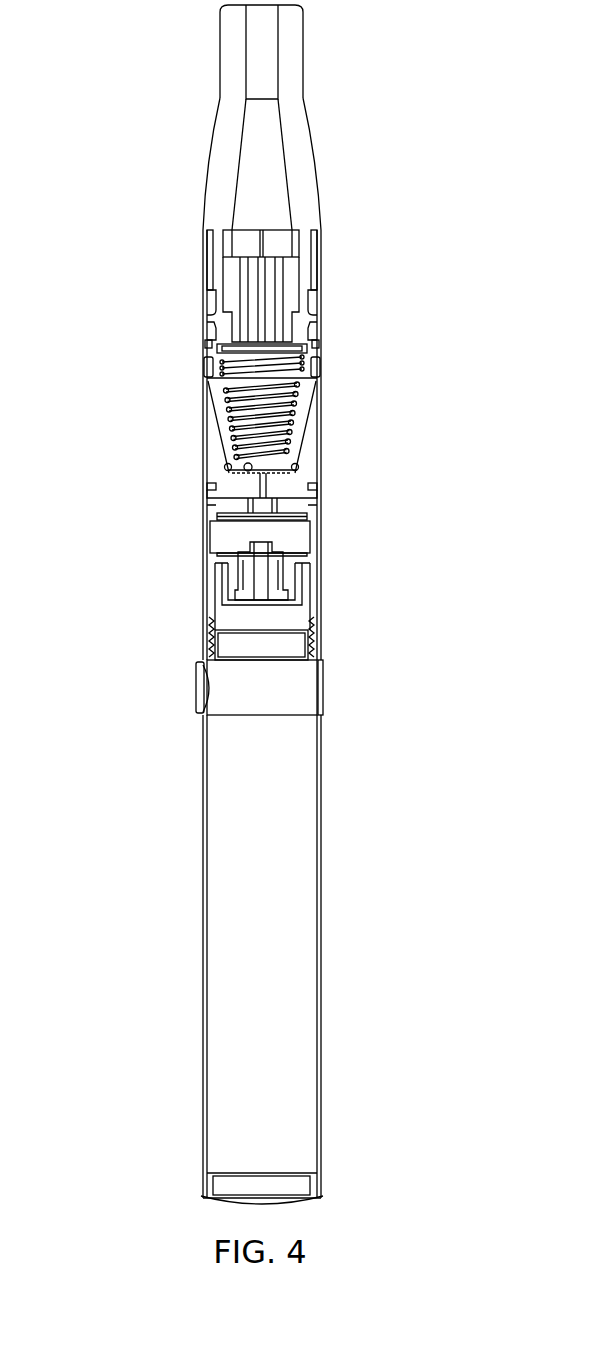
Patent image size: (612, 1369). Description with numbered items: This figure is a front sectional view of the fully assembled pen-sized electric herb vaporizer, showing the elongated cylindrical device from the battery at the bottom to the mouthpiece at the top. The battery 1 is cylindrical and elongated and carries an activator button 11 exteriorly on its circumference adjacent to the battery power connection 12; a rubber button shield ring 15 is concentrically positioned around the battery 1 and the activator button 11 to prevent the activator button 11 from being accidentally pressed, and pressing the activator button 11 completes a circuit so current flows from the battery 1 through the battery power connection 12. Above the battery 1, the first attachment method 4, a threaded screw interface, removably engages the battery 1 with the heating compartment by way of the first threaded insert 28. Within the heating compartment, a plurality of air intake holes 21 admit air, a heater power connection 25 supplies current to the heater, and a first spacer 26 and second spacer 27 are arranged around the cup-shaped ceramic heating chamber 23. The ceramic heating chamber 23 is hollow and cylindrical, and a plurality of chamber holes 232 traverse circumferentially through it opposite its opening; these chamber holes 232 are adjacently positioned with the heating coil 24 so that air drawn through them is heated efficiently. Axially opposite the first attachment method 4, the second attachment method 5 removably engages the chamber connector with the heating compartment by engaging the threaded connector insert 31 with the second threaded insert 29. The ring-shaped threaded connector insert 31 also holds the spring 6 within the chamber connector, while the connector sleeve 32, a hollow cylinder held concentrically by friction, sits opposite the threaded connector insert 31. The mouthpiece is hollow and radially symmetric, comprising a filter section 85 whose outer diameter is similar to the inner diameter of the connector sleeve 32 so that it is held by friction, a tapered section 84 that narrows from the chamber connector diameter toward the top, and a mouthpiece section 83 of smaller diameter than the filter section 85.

The battery 1 is at (208, 853).
The first attachment method 4 is at (210, 630).
The second attachment method 5 is at (208, 355).
The spring 6 is at (212, 382).
The activator button 11 is at (197, 690).
The battery power connection 12 is at (290, 613).
The button shield ring 15 is at (323, 682).
The plurality of air intake holes 21 is at (206, 548).
The ceramic heating chamber 23 is at (213, 422).
The heating coil 24 is at (244, 467).
The heater power connection 25 is at (288, 590).
The first spacer 26 is at (317, 497).
The second spacer 27 is at (317, 400).
The first threaded insert 28 is at (317, 522).
The second threaded insert 29 is at (318, 362).
The threaded connector insert 31 is at (315, 328).
The connector sleeve 32 is at (317, 238).
The mouthpiece section 83 is at (227, 42).
The tapered section 84 is at (213, 142).
The filter section 85 is at (218, 240).
The plurality of chamber holes 232 is at (225, 468).